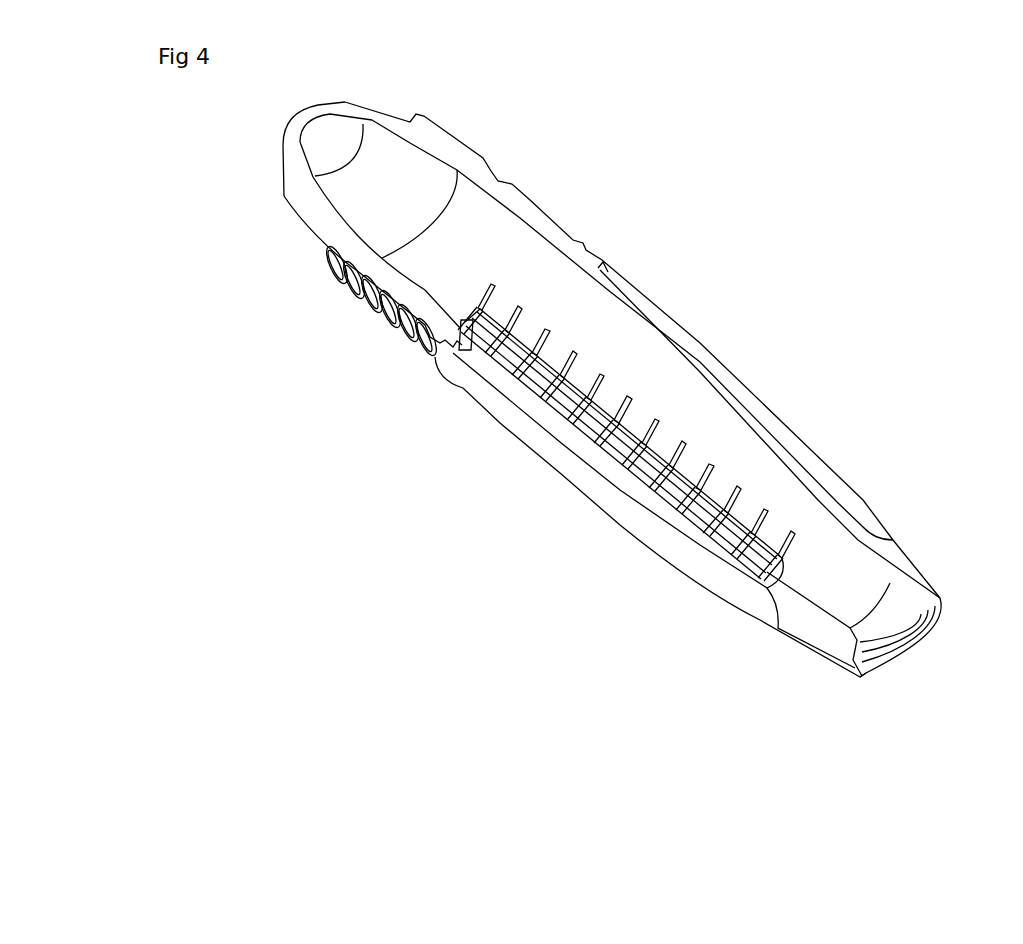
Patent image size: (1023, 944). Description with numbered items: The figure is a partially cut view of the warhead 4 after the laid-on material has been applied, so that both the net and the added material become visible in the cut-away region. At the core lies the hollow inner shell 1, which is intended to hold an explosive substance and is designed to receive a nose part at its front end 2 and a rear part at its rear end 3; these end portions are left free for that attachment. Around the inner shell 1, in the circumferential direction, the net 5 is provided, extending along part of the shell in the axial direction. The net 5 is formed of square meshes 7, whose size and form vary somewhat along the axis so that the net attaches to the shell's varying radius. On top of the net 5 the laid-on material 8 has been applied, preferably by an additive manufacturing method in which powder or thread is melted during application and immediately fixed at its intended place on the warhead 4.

The inner shell 1 is at (608, 289).
The front end 2 is at (937, 572).
The rear end 3 is at (395, 92).
The warhead 4 is at (805, 133).
The net 5 is at (557, 387).
The mesh 7 is at (487, 333).
The laid-on material 8 is at (722, 360).